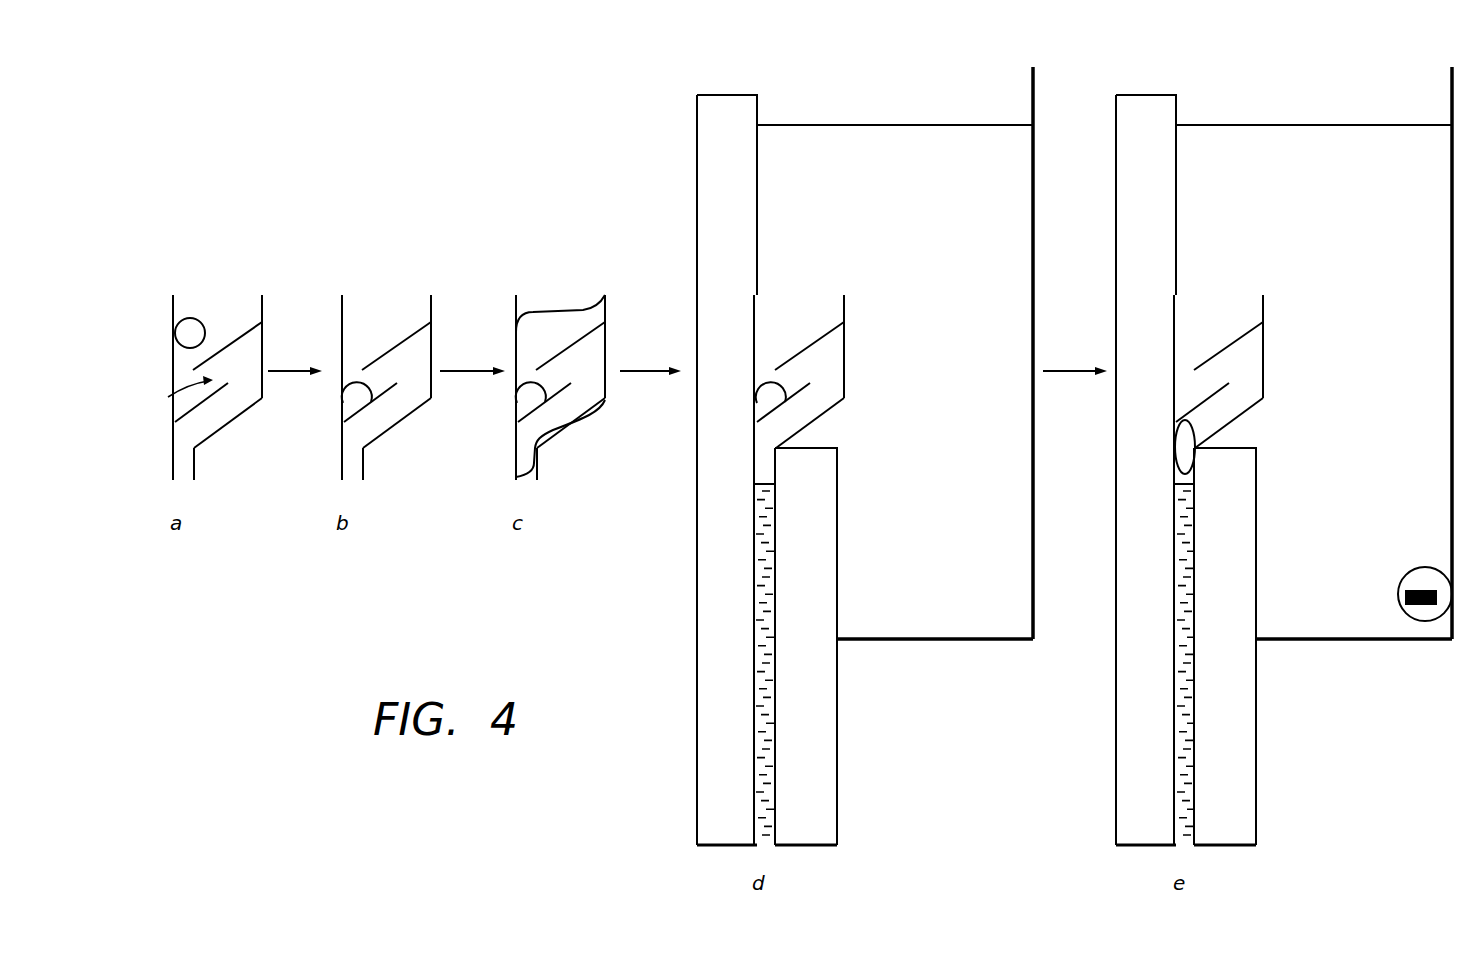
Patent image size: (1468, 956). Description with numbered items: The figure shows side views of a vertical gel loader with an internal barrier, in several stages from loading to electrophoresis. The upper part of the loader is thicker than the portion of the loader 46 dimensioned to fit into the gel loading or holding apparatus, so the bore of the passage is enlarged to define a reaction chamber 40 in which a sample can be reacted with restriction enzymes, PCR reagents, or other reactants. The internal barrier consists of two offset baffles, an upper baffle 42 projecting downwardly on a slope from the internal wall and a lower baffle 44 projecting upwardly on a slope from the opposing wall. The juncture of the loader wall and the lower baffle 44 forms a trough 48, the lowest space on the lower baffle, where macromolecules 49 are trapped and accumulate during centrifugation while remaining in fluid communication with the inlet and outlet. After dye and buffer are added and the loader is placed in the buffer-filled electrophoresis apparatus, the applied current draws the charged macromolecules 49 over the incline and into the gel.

The reaction chamber 40 is at (204, 359).
The upper baffle 42 is at (245, 330).
The lower baffle 44 is at (208, 402).
The portion of the loader dimensioned to fit into the gel apparatus 46 is at (195, 462).
The trough 48 is at (175, 400).
The macromolecules 49 is at (188, 318).